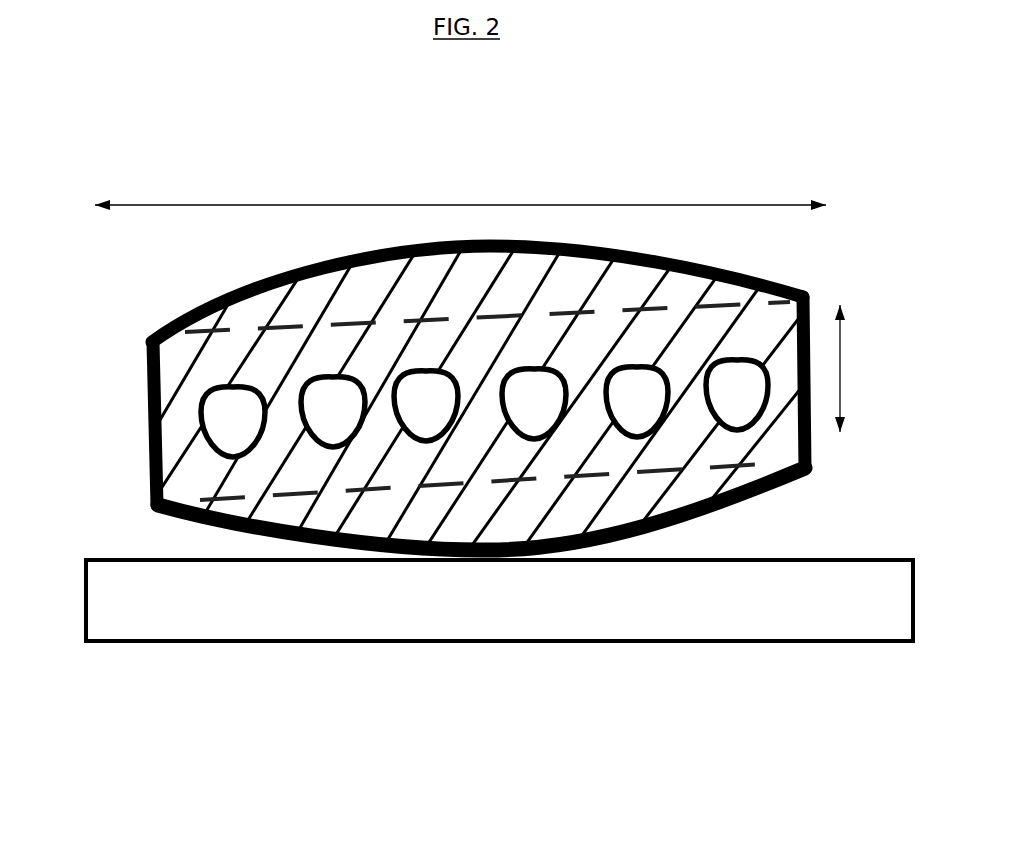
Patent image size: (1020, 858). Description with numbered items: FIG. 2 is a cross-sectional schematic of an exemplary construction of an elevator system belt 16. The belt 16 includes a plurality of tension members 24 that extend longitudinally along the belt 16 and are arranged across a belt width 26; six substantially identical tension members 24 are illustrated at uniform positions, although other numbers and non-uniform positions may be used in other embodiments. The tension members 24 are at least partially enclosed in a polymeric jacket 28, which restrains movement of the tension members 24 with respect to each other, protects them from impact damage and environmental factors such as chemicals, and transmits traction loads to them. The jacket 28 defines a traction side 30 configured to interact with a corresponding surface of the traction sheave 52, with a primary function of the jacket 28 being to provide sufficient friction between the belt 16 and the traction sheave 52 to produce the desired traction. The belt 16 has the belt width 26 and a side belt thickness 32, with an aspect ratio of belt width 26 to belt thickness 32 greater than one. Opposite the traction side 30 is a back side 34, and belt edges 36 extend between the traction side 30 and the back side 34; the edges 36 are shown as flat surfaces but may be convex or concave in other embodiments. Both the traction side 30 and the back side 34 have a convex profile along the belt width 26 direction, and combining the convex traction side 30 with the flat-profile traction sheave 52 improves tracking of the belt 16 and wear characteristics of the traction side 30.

The belt 16 is at (96, 86).
The tension members 24 is at (246, 429).
The belt width 26 is at (292, 205).
The polymeric jacket 28 is at (175, 482).
The traction side 30 is at (372, 562).
The belt thickness 32 is at (840, 368).
The back side 34 is at (715, 270).
The belt edges 36 is at (148, 430).
The traction sheave 52 is at (543, 615).